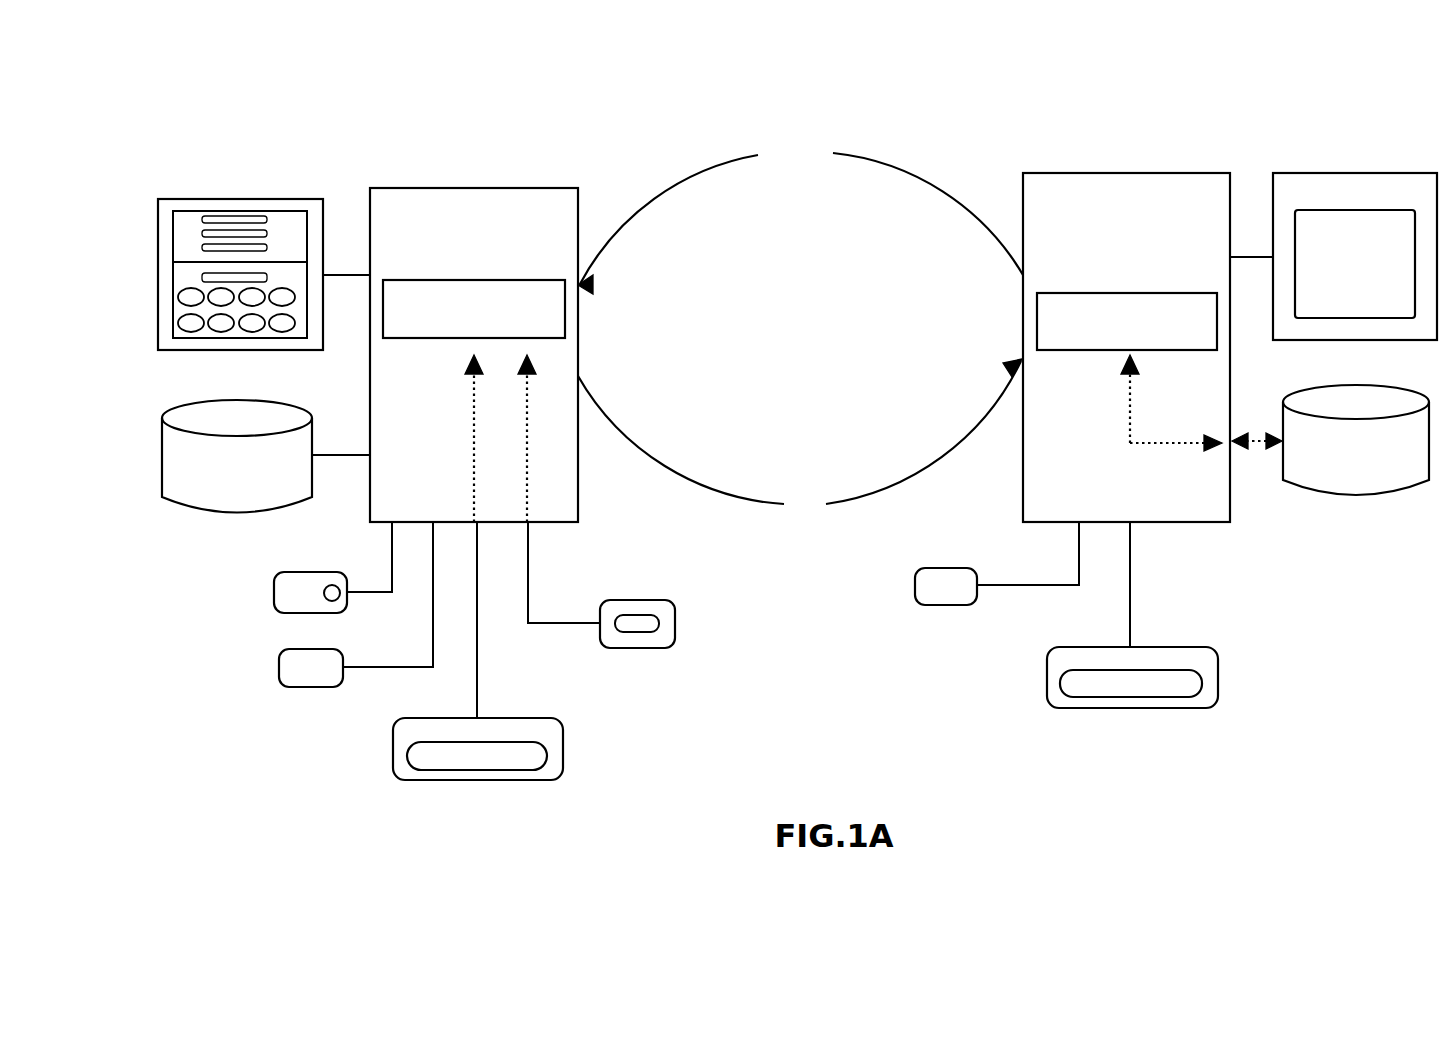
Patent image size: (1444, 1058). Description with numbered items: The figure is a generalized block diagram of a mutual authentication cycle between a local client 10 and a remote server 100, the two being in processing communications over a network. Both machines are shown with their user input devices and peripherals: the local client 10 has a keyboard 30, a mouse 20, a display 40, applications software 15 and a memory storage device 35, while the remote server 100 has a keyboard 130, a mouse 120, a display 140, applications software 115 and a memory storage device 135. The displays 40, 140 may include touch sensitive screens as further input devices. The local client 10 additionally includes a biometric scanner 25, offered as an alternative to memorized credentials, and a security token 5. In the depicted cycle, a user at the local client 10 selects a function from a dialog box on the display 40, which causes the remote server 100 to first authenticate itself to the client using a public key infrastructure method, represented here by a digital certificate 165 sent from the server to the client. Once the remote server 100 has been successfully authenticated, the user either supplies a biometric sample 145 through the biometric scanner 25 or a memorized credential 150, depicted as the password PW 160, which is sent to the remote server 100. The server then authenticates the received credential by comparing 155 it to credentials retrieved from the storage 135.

The security token 5 is at (273, 593).
The local client 10 is at (474, 355).
The applications software 15 is at (474, 309).
The mouse 20 is at (279, 678).
The biometric scanner 25 is at (675, 628).
The keyboard 30 is at (393, 748).
The memory storage device 35 is at (200, 510).
The display 40 is at (283, 197).
The remote server 100 is at (1126, 347).
The applications software 115 is at (1127, 321).
The mouse 120 is at (948, 605).
The keyboard 130 is at (1130, 708).
The memory storage device 135 is at (1320, 495).
The display 140 is at (1395, 173).
The biometric sample 145 is at (565, 627).
The memorized credential 150 is at (477, 662).
The comparing 155 is at (1130, 443).
The password PW 160 is at (807, 521).
The digital certificate 165 is at (795, 174).